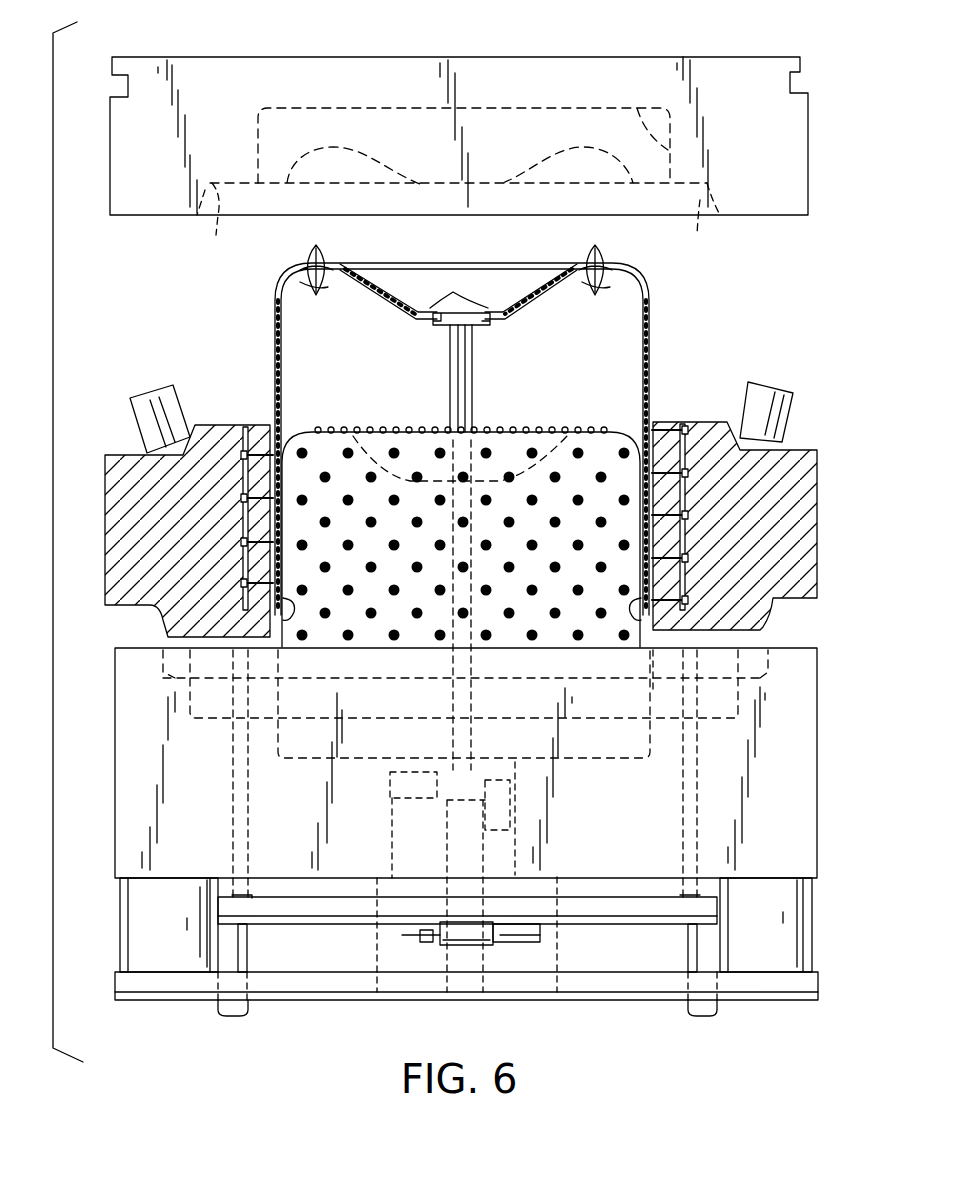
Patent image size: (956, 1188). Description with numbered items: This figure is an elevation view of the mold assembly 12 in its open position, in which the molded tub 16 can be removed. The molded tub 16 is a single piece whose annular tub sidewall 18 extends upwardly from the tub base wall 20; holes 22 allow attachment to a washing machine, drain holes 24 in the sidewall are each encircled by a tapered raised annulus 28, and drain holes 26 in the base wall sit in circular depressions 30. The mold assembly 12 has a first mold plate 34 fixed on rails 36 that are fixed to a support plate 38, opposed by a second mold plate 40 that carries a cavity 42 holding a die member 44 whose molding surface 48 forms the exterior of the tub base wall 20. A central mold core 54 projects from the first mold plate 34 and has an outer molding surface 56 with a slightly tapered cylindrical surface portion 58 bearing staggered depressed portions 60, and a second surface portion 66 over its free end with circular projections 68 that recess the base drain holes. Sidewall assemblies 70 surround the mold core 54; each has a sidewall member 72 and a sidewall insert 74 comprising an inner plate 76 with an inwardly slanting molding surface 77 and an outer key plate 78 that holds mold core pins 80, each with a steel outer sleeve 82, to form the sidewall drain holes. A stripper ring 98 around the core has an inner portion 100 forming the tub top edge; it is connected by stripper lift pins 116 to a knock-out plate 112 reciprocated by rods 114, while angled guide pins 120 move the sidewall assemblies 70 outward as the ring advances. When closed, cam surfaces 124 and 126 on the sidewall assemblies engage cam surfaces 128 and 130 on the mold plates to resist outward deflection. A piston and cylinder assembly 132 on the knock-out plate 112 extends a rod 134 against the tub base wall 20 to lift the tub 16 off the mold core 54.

The mold assembly 12 is at (459, 831).
The molded tub 16 is at (501, 493).
The tub sidewall 18 is at (650, 362).
The tub base wall 20 is at (385, 290).
The holes 22 is at (460, 295).
The drain holes 24 is at (281, 348).
The drain holes 26 is at (456, 256).
The raised annulus 28 is at (281, 412).
The circular depressions 30 is at (320, 287).
The first mold plate 34 is at (805, 763).
The rails 36 is at (140, 935).
The support plate 38 is at (174, 993).
The second mold plate 40 is at (782, 218).
The cavity 42 is at (650, 110).
The die member 44 is at (340, 110).
The molding surface 48 is at (352, 183).
The mold core 54 is at (632, 432).
The outer molding surface 56 is at (461, 530).
The cylindrical surface portion 58 is at (682, 542).
The depressed portions 60 is at (440, 498).
The second surface portion 66 is at (570, 430).
The circular projections 68 is at (402, 430).
The sidewall assemblies 70 is at (467, 483).
The sidewall member 72 is at (105, 530).
The sidewall insert 74 is at (236, 430).
The inner plate 76 is at (260, 427).
The molding surface 77 is at (250, 616).
The outer key plate 78 is at (243, 558).
The mold core pins 80 is at (243, 498).
The outer sleeve 82 is at (650, 303).
The stripper ring 98 is at (750, 645).
The inner portion 100 is at (648, 625).
The knock-out plate 112 is at (612, 905).
The rods 114 is at (247, 957).
The stripper lift pins 116 is at (233, 770).
The guide pins 120 is at (150, 392).
The cam surface 124 is at (160, 618).
The cam surface 126 is at (170, 388).
The cam surface 128 is at (170, 680).
The cam surface 130 is at (453, 224).
The piston and cylinder assembly 132 is at (425, 948).
The extensible rod 134 is at (471, 355).